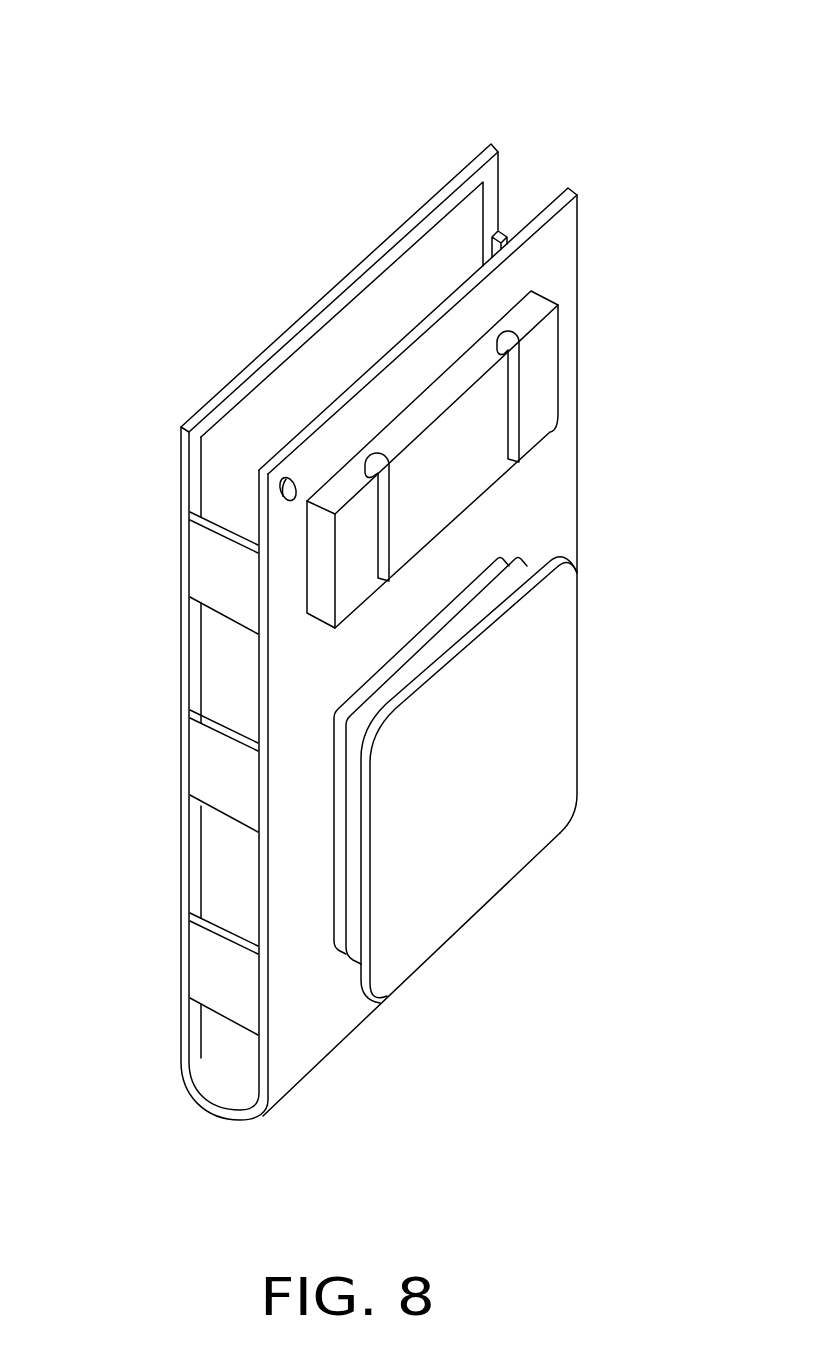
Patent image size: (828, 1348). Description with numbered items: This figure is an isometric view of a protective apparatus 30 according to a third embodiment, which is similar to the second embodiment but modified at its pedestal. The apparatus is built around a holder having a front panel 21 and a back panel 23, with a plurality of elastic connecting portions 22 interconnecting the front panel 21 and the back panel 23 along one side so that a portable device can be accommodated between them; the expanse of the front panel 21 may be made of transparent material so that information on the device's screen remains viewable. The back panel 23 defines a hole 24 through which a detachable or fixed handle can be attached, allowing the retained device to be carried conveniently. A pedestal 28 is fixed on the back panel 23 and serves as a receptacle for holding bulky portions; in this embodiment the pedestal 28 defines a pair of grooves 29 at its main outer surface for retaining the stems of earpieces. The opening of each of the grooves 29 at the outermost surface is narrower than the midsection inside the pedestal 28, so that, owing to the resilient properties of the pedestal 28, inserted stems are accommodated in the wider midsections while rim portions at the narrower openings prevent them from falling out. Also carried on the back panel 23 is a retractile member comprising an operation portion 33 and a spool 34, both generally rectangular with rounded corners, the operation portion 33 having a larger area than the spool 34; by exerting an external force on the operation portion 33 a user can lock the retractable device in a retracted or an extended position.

The protective apparatus 30 is at (259, 37).
The front panel 21 is at (184, 651).
The elastic connecting portions 22 is at (218, 771).
The back panel 23 is at (263, 895).
The hole 24 is at (278, 491).
The pedestal 28 is at (548, 353).
The grooves 29 is at (383, 513).
The operation portion 33 is at (527, 810).
The spool 34 is at (350, 913).